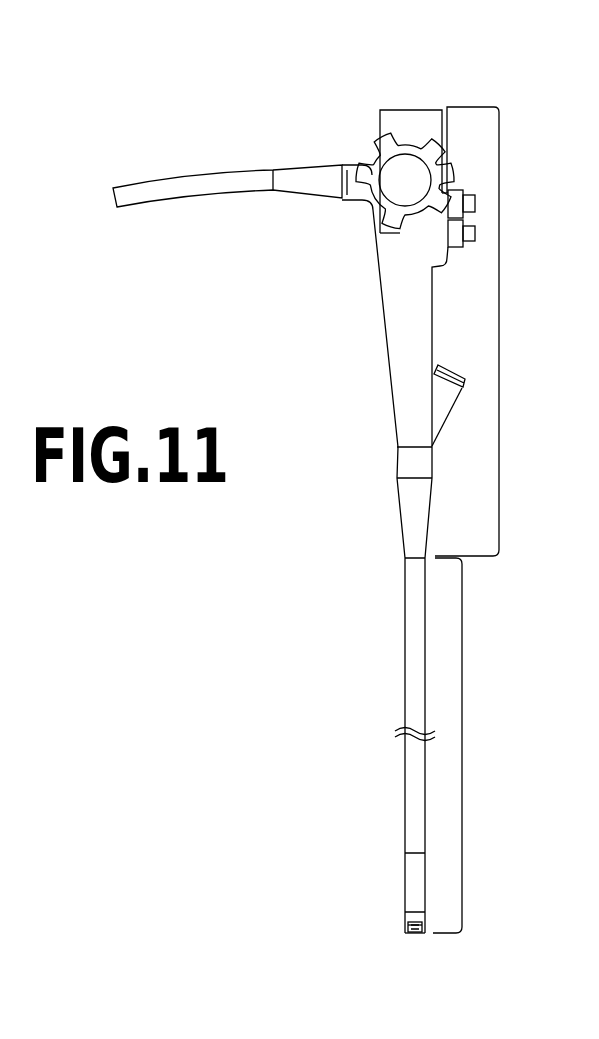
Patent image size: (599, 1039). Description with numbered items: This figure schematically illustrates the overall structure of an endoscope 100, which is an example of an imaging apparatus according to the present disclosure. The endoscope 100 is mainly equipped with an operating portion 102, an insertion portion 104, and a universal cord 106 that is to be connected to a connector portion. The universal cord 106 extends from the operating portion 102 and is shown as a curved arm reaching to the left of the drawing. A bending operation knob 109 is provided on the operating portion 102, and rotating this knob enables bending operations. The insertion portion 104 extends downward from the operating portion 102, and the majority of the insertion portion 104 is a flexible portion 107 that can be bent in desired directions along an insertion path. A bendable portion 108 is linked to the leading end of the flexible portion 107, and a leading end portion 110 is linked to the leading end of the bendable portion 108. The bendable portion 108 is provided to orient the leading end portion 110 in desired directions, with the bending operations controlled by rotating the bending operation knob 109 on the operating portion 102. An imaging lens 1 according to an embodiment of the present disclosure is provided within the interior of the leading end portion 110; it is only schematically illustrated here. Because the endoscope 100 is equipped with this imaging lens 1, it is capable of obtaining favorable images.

The endoscope 100 is at (357, 85).
The universal cord 106 is at (150, 186).
The bending operation knob 109 is at (400, 188).
The operating portion 102 is at (500, 358).
The insertion portion 104 is at (463, 747).
The flexible portion 107 is at (405, 660).
The bendable portion 108 is at (405, 884).
The leading end portion 110 is at (405, 925).
The imaging lens 1 is at (415, 936).